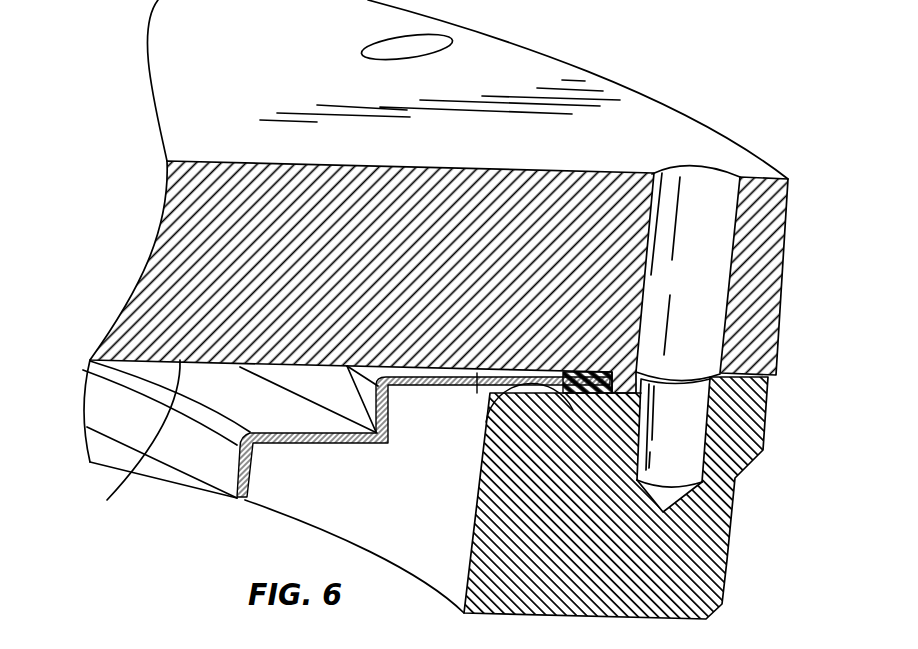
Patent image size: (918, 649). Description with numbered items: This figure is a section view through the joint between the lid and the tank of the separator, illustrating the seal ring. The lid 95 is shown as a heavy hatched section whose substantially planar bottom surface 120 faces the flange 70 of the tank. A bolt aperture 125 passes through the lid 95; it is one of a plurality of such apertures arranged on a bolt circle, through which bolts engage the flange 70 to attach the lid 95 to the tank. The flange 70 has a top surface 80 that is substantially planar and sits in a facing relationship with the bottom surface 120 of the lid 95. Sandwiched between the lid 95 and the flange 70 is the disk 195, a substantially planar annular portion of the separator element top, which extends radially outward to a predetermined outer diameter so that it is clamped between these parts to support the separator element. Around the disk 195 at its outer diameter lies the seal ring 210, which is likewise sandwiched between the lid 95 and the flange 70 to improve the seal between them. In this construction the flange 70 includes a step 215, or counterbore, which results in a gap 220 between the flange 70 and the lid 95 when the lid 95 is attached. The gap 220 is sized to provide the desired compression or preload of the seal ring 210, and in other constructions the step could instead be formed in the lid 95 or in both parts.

The lid 95 is at (640, 110).
The bolt aperture 125 is at (708, 187).
The step 215 is at (613, 375).
The seal ring 210 is at (632, 421).
The flange 70 is at (710, 572).
The top surface 80 is at (477, 393).
The gap 220 is at (460, 380).
The disk 195 is at (392, 440).
The bottom surface 120 is at (266, 486).